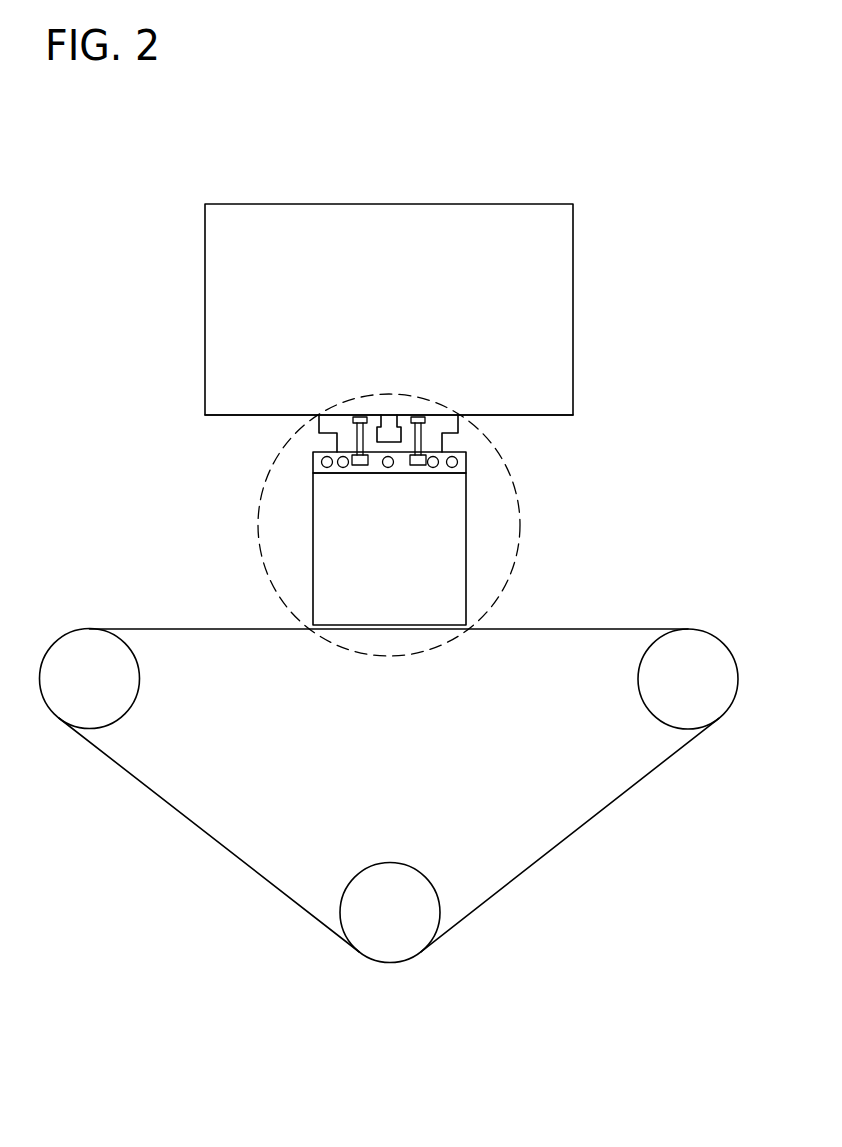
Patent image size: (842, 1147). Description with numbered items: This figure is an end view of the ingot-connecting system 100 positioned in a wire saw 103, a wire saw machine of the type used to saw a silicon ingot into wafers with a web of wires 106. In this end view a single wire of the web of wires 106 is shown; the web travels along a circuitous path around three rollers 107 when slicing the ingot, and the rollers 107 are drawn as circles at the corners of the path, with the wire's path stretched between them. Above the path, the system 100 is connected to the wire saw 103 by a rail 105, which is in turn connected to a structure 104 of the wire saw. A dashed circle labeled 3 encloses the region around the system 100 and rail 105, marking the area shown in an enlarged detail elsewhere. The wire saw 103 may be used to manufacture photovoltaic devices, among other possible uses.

The detail region of the imaging unit 3 is at (258, 497).
The system 100 is at (292, 539).
The wire saw 103 is at (172, 249).
The structure 104 is at (560, 415).
The rail 105 is at (400, 418).
The web of wires 106 is at (240, 860).
The rollers 107 is at (115, 723).